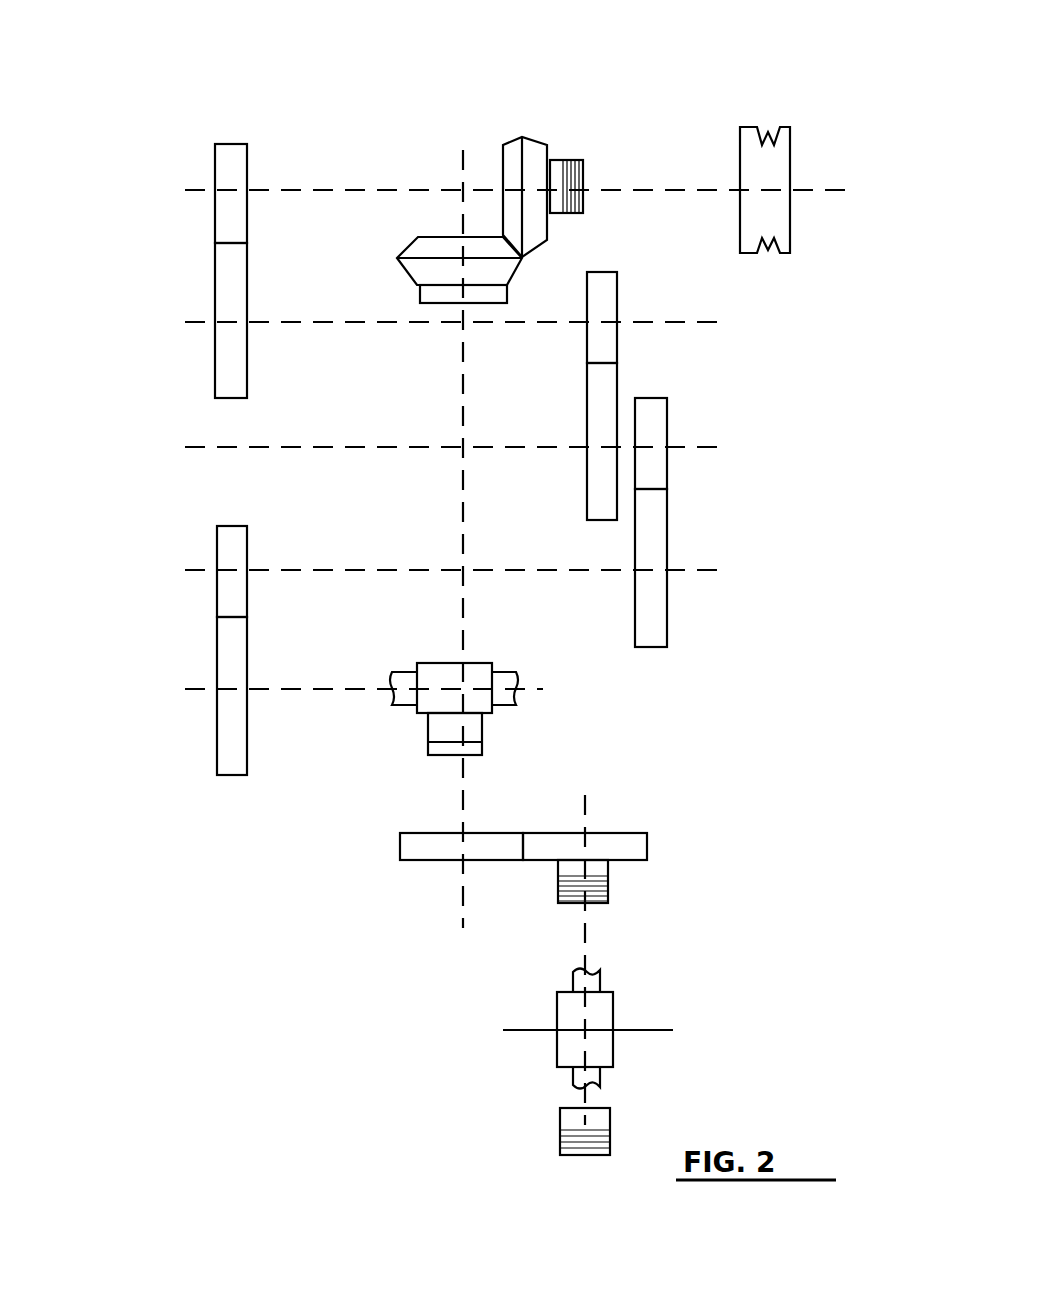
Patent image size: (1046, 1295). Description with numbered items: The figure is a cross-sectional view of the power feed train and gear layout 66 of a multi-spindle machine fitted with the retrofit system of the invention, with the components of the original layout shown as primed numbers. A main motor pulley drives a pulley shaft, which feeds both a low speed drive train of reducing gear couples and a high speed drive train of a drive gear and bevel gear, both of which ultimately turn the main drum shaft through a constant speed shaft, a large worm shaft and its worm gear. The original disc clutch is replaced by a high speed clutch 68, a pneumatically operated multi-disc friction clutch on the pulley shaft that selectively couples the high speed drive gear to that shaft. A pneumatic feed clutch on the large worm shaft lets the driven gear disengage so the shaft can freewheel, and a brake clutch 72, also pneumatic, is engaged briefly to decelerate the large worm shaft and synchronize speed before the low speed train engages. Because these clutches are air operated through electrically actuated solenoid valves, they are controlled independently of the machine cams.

The power feed train and gear layout 66 is at (157, 113).
The high speed clutch 68 is at (582, 145).
The brake clutch 72 is at (558, 1141).